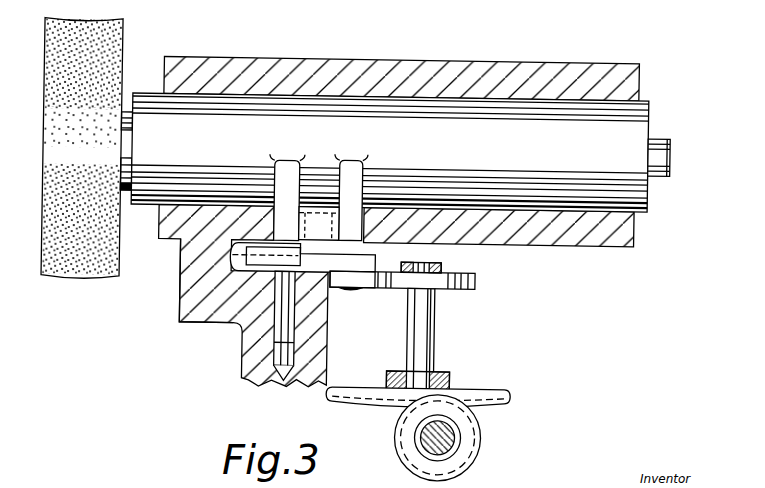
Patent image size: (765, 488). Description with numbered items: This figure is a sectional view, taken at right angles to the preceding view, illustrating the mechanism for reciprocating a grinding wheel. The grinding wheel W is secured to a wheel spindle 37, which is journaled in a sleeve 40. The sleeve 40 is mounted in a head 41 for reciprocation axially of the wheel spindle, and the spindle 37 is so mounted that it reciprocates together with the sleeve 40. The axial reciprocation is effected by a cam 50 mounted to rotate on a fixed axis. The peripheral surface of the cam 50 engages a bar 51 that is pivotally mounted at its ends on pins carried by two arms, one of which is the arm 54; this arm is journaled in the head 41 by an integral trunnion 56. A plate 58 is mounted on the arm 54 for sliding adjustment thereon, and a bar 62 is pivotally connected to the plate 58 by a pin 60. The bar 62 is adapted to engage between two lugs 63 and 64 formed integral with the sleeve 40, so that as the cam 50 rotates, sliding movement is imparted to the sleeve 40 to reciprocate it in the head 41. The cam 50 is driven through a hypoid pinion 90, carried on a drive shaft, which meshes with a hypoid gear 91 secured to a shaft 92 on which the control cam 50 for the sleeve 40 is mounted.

The grinding wheel W is at (72, 277).
The wheel spindle 37 is at (668, 142).
The sleeve 40 is at (213, 98).
The head 41 is at (527, 61).
The cam 50 is at (477, 271).
The bar 51 is at (367, 276).
The arm 54 is at (198, 325).
The trunnion 56 is at (283, 338).
The plate 58 is at (255, 248).
The pin 60 is at (320, 234).
The bar 62 is at (302, 224).
The lug 63 is at (283, 210).
The lug 64 is at (358, 219).
The hypoid pinion 90 is at (477, 437).
The hypoid gear 91 is at (497, 389).
The shaft 92 is at (430, 330).